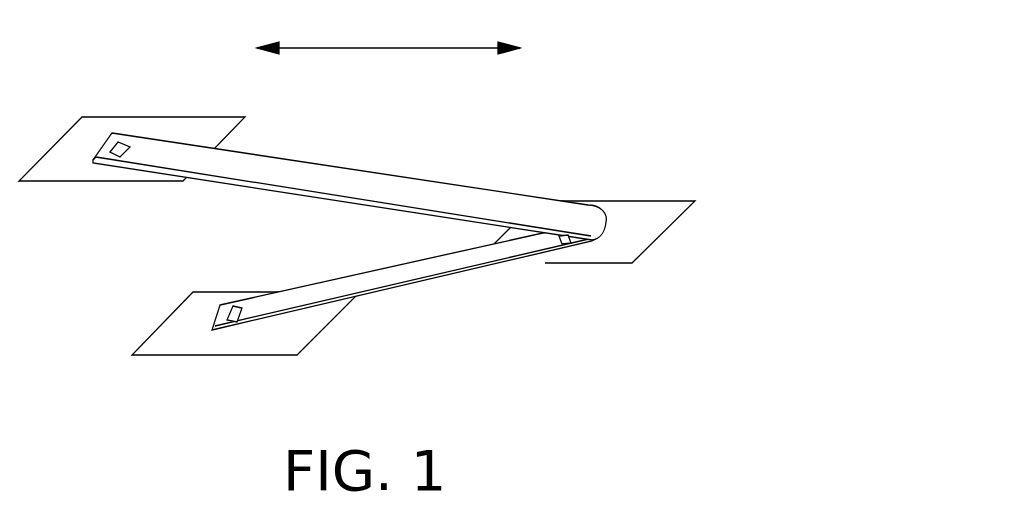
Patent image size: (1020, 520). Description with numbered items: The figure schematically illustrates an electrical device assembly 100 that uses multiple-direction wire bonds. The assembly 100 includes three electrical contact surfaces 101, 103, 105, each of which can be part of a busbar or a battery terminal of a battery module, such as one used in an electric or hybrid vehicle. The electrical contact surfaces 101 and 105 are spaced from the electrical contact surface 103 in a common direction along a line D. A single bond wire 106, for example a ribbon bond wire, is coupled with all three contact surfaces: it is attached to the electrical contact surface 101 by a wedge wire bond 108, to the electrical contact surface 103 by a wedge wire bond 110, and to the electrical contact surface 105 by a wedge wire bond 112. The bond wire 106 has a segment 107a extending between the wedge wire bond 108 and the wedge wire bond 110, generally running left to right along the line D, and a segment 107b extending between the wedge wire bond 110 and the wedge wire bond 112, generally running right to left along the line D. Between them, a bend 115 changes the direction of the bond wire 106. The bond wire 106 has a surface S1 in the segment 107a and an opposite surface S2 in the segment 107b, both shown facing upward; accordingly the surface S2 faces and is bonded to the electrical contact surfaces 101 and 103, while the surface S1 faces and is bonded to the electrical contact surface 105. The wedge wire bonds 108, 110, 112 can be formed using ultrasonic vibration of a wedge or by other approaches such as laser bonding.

The electrical device assembly 100 is at (705, 45).
The electrical contact surface 101 is at (183, 356).
The electrical contact surface 103 is at (628, 200).
The electrical contact surface 105 is at (134, 116).
The bond wire 106 is at (378, 160).
The segment 107a is at (420, 290).
The segment 107b is at (418, 178).
The wedge wire bond 108 is at (232, 308).
The wedge wire bond 110 is at (566, 246).
The wedge wire bond 112 is at (119, 158).
The bend 115 is at (610, 228).
The surface S1 is at (485, 262).
The surface S2 is at (275, 172).
The line D is at (388, 33).